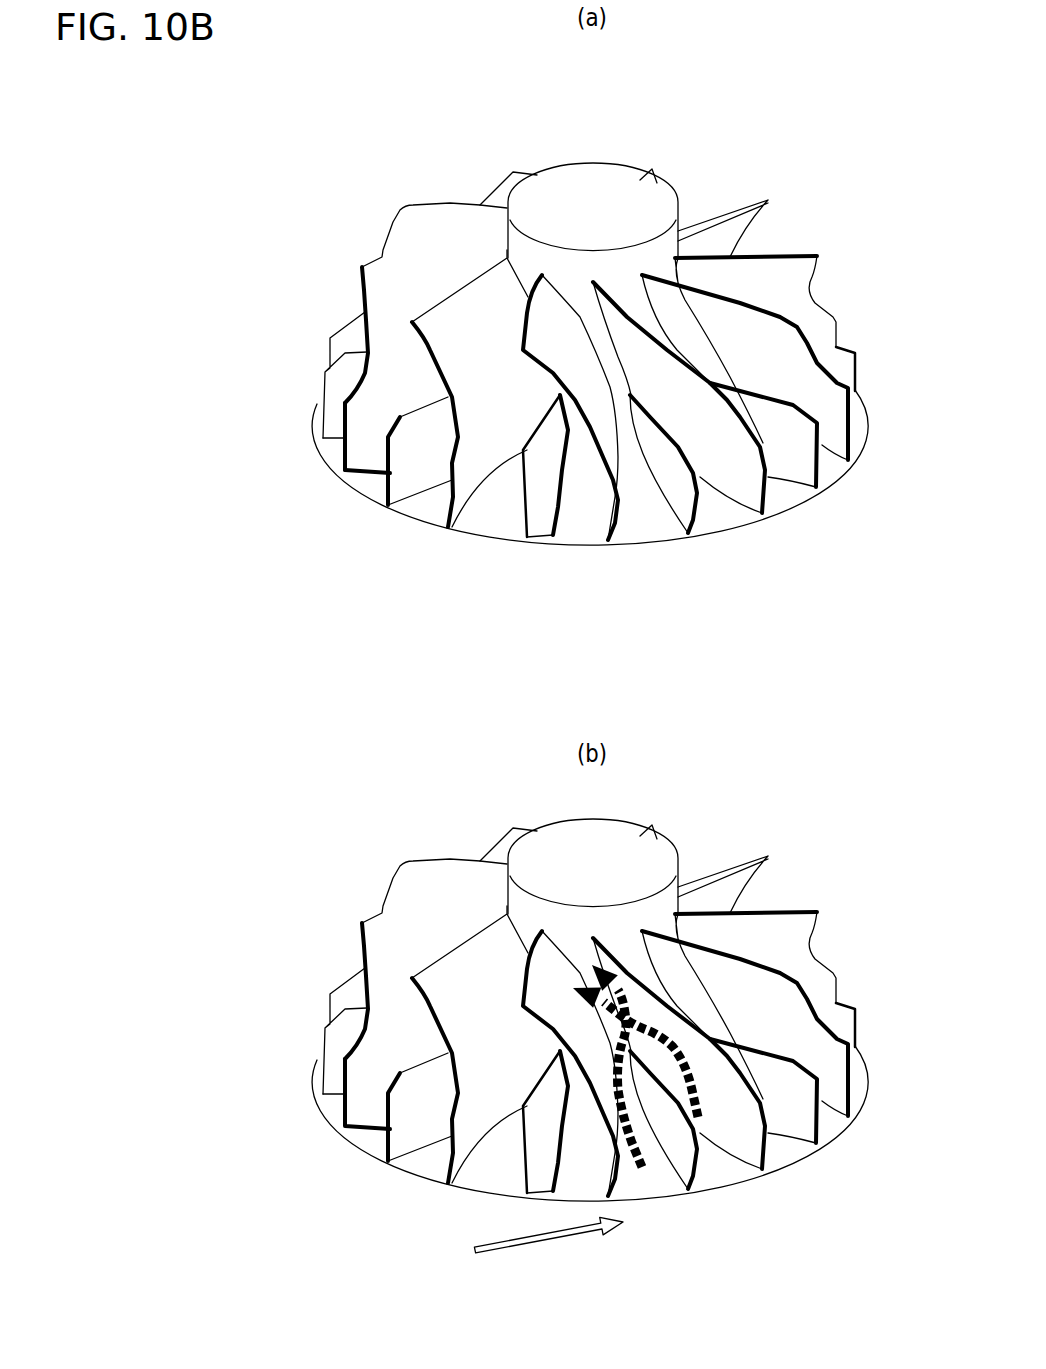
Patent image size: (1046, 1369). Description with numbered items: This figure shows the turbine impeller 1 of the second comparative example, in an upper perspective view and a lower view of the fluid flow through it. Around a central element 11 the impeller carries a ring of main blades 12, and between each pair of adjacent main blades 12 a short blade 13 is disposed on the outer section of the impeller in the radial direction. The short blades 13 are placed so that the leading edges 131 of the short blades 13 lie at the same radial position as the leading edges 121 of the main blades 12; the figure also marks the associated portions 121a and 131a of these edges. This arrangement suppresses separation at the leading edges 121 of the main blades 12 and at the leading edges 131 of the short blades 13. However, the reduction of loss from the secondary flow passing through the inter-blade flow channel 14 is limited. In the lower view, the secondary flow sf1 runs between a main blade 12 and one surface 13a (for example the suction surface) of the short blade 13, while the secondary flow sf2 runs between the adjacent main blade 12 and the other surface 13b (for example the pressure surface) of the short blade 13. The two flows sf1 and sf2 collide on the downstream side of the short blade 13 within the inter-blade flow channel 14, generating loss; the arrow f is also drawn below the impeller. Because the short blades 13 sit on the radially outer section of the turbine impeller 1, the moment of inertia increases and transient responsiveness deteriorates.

The turbine impeller 1 is at (325, 84).
The hub 11 is at (656, 172).
The main blade 12 is at (523, 307).
The short blade 13 is at (413, 396).
The surface of the short blade 13a is at (542, 507).
The another surface of the short blade 13b is at (527, 490).
The inter-blade flow channel 14 is at (520, 533).
The leading edge of the main blade 121 is at (325, 428).
The main blade trailing edge corner 121a is at (333, 470).
The leading edge of the short blade 131 is at (390, 480).
The splitter blade trailing edge corner 131a is at (383, 480).
The secondary flow sf1 is at (703, 1114).
The secondary flow sf2 is at (648, 1162).
The rotation direction f is at (543, 1244).